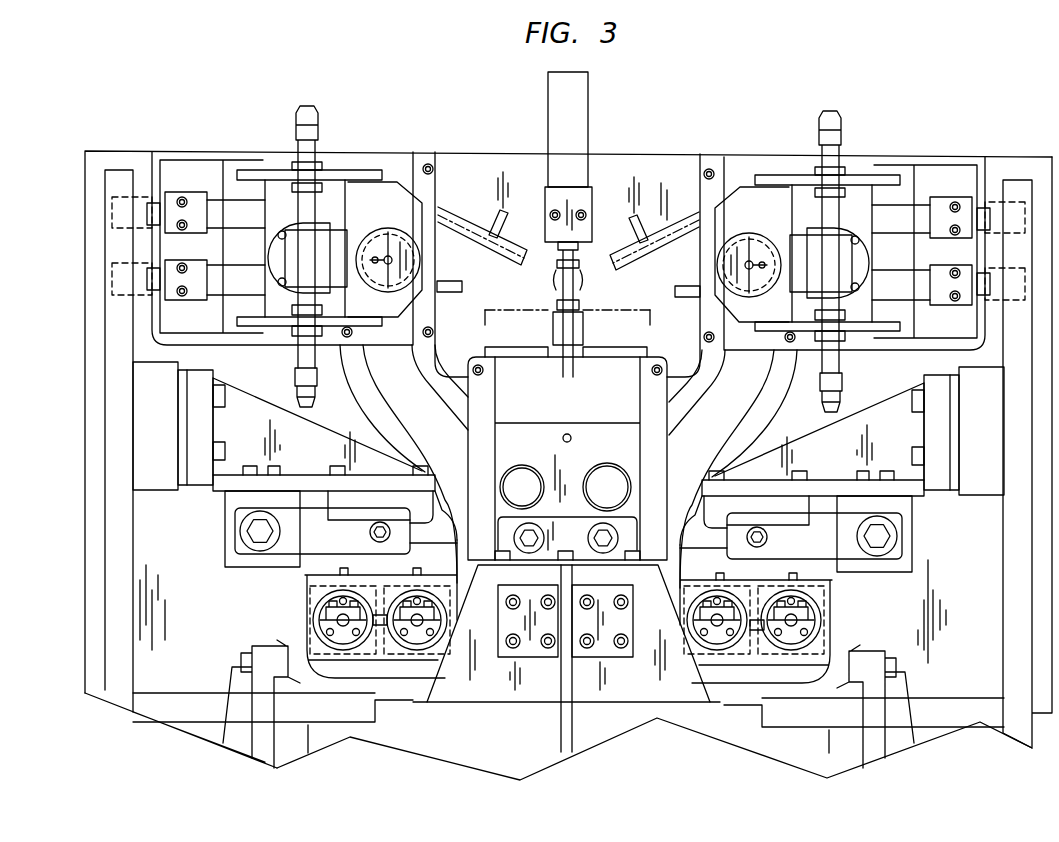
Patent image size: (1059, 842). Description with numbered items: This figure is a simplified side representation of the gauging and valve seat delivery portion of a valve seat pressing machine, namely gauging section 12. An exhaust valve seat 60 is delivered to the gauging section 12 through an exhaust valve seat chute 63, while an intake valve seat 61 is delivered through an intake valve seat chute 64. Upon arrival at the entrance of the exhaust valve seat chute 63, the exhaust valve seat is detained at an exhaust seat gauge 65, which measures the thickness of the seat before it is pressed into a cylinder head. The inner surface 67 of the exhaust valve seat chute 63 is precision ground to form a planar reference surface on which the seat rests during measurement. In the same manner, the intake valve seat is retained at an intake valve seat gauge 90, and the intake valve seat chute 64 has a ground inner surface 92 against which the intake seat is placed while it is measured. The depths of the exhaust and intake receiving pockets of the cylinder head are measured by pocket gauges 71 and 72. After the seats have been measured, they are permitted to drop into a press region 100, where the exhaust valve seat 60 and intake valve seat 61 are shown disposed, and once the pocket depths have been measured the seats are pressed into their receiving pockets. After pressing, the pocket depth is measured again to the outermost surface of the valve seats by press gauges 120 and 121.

The gauging section 12 is at (487, 118).
The exhaust valve seat chute 63 is at (392, 162).
The intake valve seat chute 64 is at (755, 160).
The exhaust seat gauge 65 is at (382, 232).
The intake valve seat gauge 90 is at (752, 235).
The inner surface 67 is at (393, 392).
The ground inner surface 92 is at (745, 385).
The press region 100 is at (518, 435).
The exhaust valve seat 60 is at (523, 463).
The intake valve seat 61 is at (607, 461).
The pocket gauge 71 is at (309, 612).
The pocket gauge 72 is at (438, 650).
The press gauge 120 is at (690, 636).
The press gauge 121 is at (810, 626).